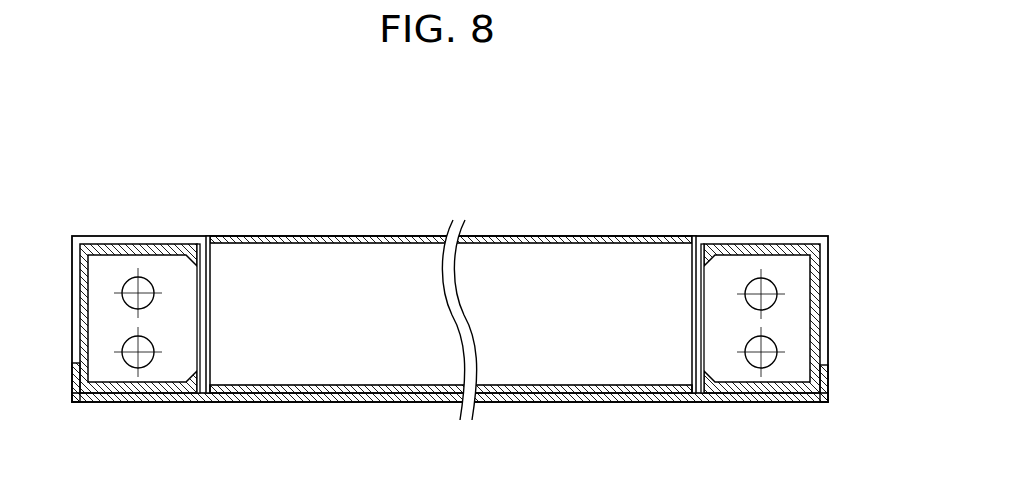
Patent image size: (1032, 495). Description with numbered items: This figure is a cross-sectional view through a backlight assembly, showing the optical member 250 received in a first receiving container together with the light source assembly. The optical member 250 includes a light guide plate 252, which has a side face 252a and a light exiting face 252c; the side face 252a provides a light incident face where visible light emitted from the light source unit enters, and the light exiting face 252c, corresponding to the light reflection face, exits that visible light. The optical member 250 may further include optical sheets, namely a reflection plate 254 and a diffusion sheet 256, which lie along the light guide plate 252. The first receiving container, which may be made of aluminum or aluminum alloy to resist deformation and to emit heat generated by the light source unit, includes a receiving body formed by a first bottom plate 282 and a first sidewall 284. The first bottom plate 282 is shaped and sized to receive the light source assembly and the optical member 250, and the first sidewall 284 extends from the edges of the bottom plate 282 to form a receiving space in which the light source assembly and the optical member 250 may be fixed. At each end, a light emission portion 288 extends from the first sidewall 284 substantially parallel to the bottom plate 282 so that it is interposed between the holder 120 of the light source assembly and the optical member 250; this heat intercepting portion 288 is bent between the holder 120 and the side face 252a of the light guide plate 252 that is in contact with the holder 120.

The holder 120 is at (800, 324).
The optical member 250 is at (445, 323).
The light guide plate 252 is at (445, 286).
The side face 252a is at (220, 259).
The light exiting face 252c is at (312, 235).
The reflection plate 254 is at (552, 390).
The diffusion sheet 256 is at (508, 235).
The first bottom plate 282 is at (697, 394).
The first sidewall 284 is at (485, 351).
The light emission portion 288 is at (792, 242).